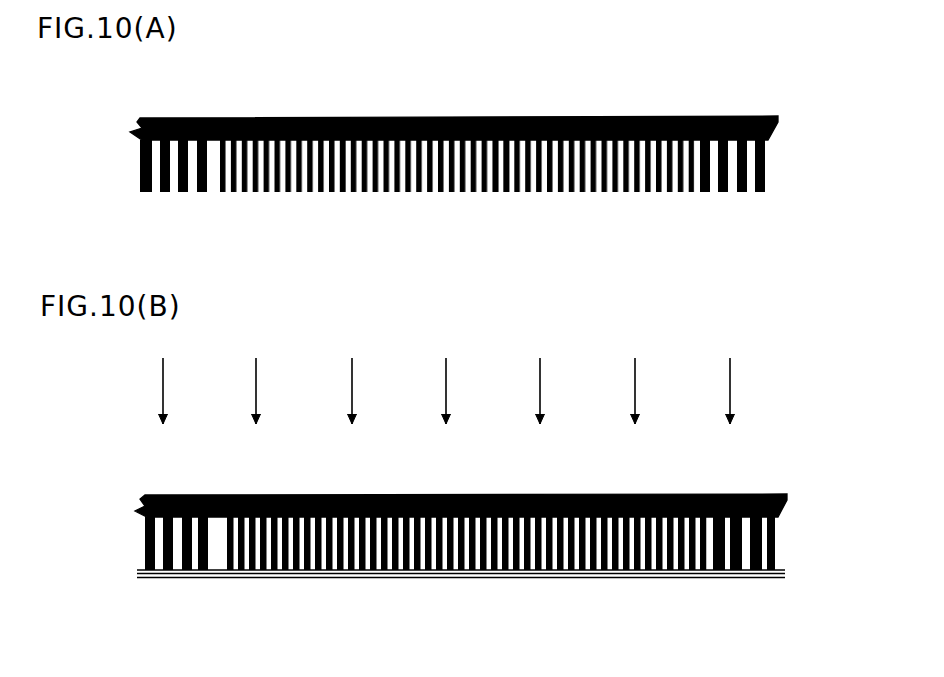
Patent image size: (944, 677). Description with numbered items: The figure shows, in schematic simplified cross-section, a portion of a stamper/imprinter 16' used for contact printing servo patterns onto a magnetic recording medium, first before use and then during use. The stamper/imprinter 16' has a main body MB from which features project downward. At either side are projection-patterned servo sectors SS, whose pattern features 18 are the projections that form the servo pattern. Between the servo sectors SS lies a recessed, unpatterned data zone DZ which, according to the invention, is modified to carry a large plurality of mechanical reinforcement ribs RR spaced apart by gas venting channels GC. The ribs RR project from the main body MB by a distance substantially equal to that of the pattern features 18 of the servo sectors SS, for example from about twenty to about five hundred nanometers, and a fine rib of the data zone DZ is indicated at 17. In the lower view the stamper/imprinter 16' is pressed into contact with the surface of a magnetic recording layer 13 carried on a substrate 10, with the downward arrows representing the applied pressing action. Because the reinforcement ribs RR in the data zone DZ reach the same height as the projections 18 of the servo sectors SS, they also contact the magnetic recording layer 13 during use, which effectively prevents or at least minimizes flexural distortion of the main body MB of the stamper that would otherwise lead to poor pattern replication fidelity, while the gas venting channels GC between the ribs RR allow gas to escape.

In FIG. 10A, the stamper/imprinter 16' is at (489, 152).
In FIG. 10A, the main body MB is at (783, 118).
In FIG. 10A, the servo sectors SS is at (212, 93).
In FIG. 10A, the data zones DZ is at (692, 99).
In FIG. 10A, the fine rib in dense zone 17 is at (344, 199).
In FIG. 10A, the pattern features 18 is at (729, 198).
In FIG. 10A, the mechanical reinforcement ribs RR is at (492, 196).
In FIG. 10A, the gas venting channels GC is at (501, 195).
In FIG. 10B, the magnetic recording layer 13 is at (778, 561).
In FIG. 10B, the substrate 10 is at (753, 579).